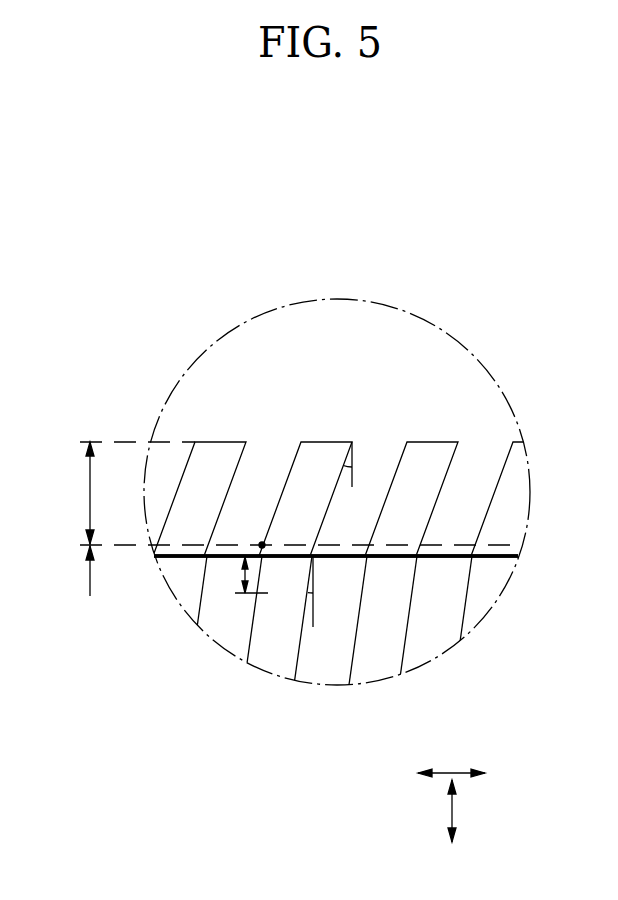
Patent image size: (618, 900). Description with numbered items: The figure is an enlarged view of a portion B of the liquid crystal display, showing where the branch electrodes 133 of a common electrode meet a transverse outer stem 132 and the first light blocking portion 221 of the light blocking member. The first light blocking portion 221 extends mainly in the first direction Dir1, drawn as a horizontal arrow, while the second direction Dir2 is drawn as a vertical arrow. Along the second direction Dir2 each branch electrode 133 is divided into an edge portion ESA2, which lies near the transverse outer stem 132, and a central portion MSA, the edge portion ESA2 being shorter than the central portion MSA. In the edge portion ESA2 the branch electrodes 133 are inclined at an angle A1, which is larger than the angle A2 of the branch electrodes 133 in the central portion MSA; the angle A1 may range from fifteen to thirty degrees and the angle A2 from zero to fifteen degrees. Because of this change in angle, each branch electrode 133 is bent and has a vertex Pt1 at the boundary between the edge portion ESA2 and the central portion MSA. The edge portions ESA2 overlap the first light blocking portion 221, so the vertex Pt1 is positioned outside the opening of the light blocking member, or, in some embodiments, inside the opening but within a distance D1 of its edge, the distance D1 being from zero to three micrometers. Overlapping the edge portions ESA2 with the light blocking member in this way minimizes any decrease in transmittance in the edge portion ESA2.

The transverse outer stem 132 is at (430, 442).
The branch electrodes 133 is at (202, 590).
The first light blocking portion 221 is at (445, 557).
The vertex Pt1 is at (262, 545).
The edge portion ESA2 is at (112, 493).
The central portion MSA is at (274, 571).
The distance D1 is at (240, 576).
The angle A1 is at (363, 464).
The angle A2 is at (326, 591).
The first direction Dir1 is at (473, 776).
The second direction Dir2 is at (475, 811).
The portion B is at (60, 331).